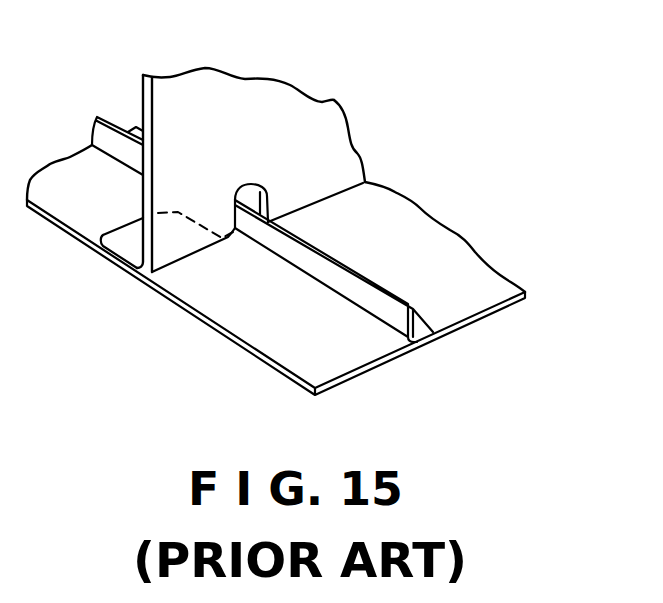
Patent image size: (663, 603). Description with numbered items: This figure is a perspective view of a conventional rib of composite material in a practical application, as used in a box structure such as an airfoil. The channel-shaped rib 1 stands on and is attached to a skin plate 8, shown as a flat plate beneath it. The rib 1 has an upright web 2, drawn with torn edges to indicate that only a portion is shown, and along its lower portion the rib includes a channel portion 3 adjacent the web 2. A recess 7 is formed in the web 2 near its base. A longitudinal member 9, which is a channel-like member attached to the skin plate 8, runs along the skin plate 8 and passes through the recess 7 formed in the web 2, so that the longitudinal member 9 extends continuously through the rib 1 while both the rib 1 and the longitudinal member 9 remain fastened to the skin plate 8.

The channel-shaped rib 1 is at (332, 102).
The web 2 is at (320, 140).
The reinforcing channel 3 is at (128, 242).
The recess 7 is at (256, 192).
The skin plate 8 is at (227, 337).
The longitudinal member 9 is at (367, 304).